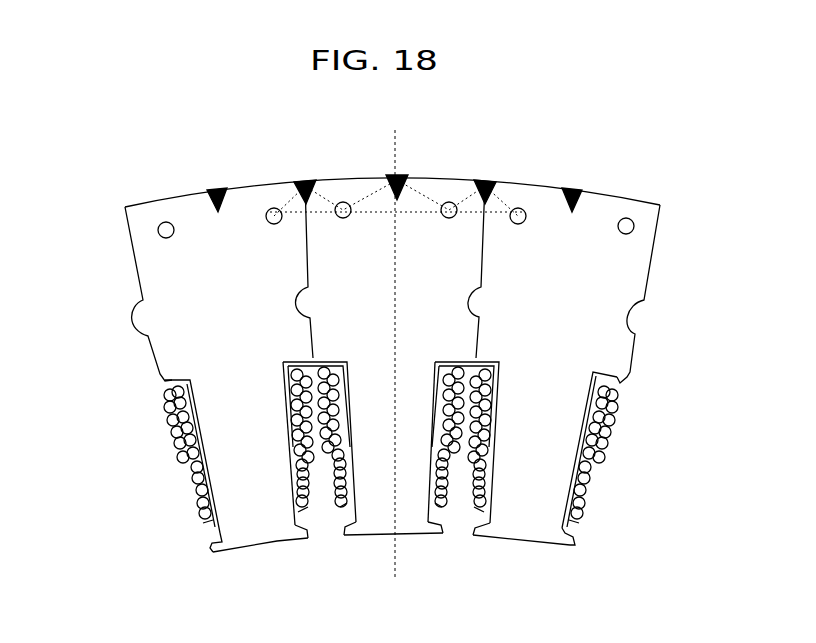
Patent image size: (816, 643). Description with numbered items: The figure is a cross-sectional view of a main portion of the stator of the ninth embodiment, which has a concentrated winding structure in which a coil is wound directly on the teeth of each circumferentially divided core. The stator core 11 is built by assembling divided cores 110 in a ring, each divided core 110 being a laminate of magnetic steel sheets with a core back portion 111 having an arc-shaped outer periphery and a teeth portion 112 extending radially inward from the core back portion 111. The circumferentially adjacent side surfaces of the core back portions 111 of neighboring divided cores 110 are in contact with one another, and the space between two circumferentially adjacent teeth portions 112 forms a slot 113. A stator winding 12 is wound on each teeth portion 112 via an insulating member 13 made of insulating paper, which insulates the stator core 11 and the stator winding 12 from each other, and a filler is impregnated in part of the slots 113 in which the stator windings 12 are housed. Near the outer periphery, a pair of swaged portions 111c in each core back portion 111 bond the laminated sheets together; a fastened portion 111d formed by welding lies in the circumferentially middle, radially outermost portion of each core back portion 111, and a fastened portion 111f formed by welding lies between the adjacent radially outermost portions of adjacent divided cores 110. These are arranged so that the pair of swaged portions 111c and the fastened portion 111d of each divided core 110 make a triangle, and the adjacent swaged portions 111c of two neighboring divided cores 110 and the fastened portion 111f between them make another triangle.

The stator core 11 is at (141, 158).
The divided core 110 is at (152, 270).
The core back portion 111 is at (613, 281).
The swaged portion 111c is at (626, 227).
The fastened portion 111d is at (583, 172).
The fastened portion 111f is at (492, 180).
The teeth portion 112 is at (560, 489).
The slot 113 is at (455, 525).
The stator winding 12 is at (172, 421).
The insulating member 13 is at (157, 365).